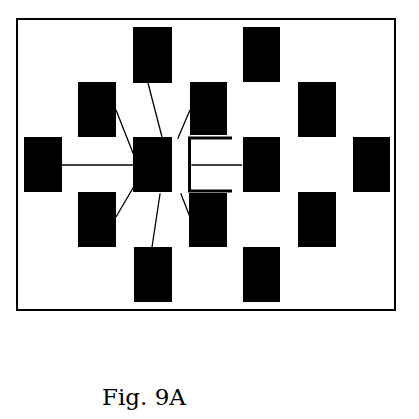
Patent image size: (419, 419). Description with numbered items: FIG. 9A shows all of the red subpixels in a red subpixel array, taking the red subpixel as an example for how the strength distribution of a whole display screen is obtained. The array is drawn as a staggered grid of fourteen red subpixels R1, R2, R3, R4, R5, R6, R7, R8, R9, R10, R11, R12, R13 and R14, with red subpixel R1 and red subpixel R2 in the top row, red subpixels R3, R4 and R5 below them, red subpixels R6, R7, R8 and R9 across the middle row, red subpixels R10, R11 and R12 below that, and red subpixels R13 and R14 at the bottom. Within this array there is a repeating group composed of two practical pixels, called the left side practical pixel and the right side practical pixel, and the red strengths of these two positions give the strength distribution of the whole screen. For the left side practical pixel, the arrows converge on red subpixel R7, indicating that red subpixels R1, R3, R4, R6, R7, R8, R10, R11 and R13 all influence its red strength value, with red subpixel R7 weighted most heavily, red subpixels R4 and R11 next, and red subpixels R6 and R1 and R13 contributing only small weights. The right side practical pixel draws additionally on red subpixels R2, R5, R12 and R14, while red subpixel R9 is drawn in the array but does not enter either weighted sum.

The red subpixel R1 is at (152, 82).
The red subpixel R2 is at (261, 54).
The red subpixel R3 is at (105, 117).
The red subpixel R4 is at (202, 110).
The red subpixel R5 is at (317, 109).
The red subpixel R6 is at (78, 164).
The red subpixel R7 is at (152, 164).
The red subpixel R8 is at (236, 164).
The red subpixel R9 is at (371, 164).
The red subpixel R10 is at (105, 217).
The red subpixel R11 is at (204, 220).
The red subpixel R12 is at (317, 219).
The red subpixel R13 is at (153, 248).
The red subpixel R14 is at (261, 274).